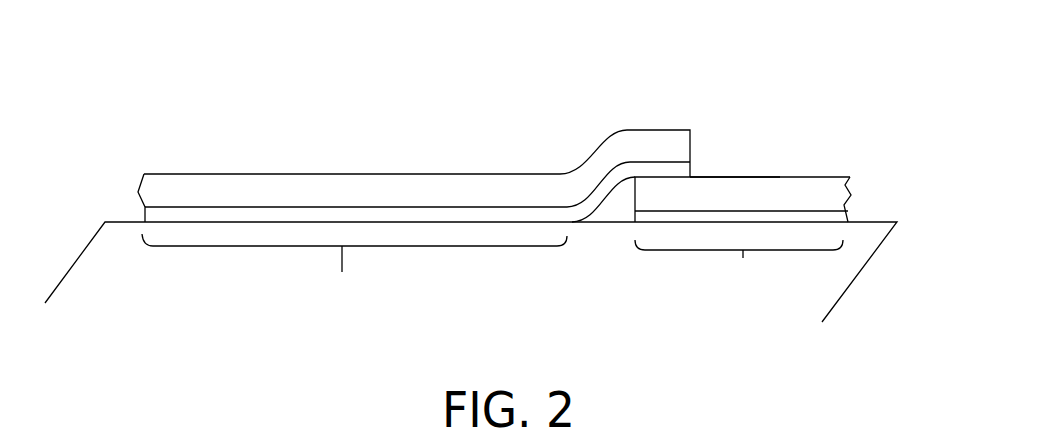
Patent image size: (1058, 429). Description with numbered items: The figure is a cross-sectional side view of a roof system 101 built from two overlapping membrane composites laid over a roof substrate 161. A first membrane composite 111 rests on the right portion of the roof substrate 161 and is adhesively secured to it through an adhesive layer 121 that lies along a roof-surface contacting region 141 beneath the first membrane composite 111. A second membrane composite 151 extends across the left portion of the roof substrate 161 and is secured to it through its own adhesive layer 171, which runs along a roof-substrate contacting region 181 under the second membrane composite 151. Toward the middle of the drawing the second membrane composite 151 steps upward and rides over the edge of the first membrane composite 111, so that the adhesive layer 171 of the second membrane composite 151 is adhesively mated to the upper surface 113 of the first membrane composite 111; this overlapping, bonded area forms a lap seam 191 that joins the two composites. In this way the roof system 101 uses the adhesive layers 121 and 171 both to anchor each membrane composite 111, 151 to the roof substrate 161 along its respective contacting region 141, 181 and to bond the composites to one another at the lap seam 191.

The roof system 101 is at (678, 98).
The first membrane composite 111 is at (778, 173).
The upper surface 113 is at (715, 175).
The adhesive layer 121 is at (848, 218).
The roof-surface contacting region 141 is at (739, 270).
The second membrane composite 151 is at (310, 173).
The roof substrate 161 is at (471, 276).
The adhesive layer 171 is at (142, 214).
The roof-substrate contacting region 181 is at (354, 267).
The lap seam 191 is at (650, 183).